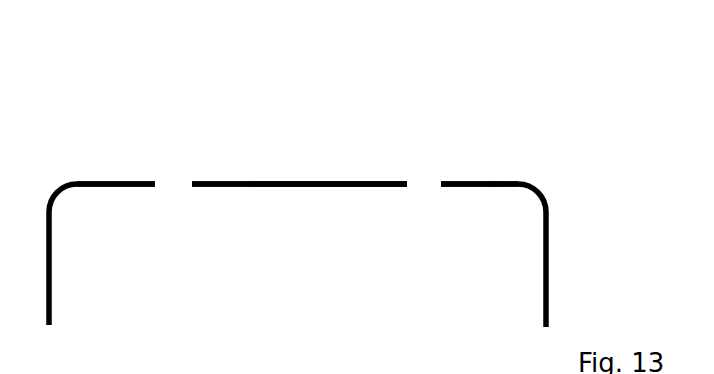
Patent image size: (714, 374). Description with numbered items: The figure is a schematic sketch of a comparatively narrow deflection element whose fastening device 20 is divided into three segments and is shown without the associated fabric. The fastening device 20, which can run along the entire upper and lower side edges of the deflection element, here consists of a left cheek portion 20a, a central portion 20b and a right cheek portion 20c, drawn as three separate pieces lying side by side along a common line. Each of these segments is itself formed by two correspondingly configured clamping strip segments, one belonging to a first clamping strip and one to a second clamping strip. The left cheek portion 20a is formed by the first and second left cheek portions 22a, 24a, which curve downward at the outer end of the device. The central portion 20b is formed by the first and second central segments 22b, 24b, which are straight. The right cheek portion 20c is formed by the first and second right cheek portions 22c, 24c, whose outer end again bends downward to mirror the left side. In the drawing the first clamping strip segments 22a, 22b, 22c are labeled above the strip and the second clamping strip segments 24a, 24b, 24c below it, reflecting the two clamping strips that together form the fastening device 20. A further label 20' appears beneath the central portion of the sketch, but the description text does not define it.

The fastening device 20 is at (299, 121).
The left cheek portion 20a is at (53, 190).
The central portion 20b is at (270, 180).
The right cheek portion 20c is at (520, 181).
The first left cheek portion 22a is at (98, 182).
The first central segment 22b is at (332, 180).
The first right cheek portion 22c is at (463, 180).
The second left cheek portion 24a is at (122, 188).
The second central segment 24b is at (354, 188).
The second right cheek portion 24c is at (486, 188).
The bent sheet component 20' is at (243, 361).